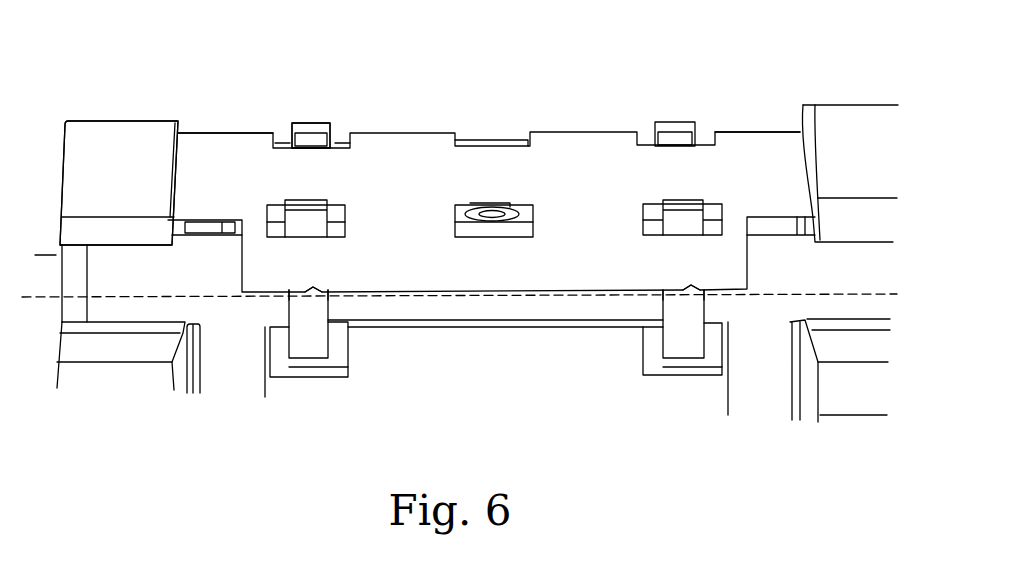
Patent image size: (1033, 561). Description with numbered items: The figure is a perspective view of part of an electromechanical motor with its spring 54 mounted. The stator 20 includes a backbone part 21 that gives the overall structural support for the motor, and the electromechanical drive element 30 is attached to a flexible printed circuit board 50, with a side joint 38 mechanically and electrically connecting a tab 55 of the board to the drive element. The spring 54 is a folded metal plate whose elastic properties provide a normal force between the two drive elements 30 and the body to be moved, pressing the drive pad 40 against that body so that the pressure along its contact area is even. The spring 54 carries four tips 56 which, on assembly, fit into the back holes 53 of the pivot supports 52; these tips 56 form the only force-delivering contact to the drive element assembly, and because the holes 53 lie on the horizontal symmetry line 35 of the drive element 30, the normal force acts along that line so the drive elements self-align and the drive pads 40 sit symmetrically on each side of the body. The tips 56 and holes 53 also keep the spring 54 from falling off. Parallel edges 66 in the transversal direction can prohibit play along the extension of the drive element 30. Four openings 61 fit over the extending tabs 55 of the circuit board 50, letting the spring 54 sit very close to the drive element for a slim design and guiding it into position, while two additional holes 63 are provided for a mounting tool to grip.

The stator 20 is at (145, 133).
The backbone part 21 is at (133, 130).
The electromechanical drive element 30 is at (472, 322).
The horizontal symmetry line 35 is at (185, 295).
The side joint 38 is at (300, 125).
The drive pad 40 is at (525, 205).
The flexible printed circuit board 50 is at (225, 388).
The pivot support 52 is at (307, 125).
The hole 53 is at (290, 297).
The spring 54 is at (600, 140).
The tab 55 is at (310, 378).
The tip 56 is at (310, 292).
The opening 61 is at (343, 133).
The hole 63 is at (462, 135).
The edge 66 is at (193, 133).